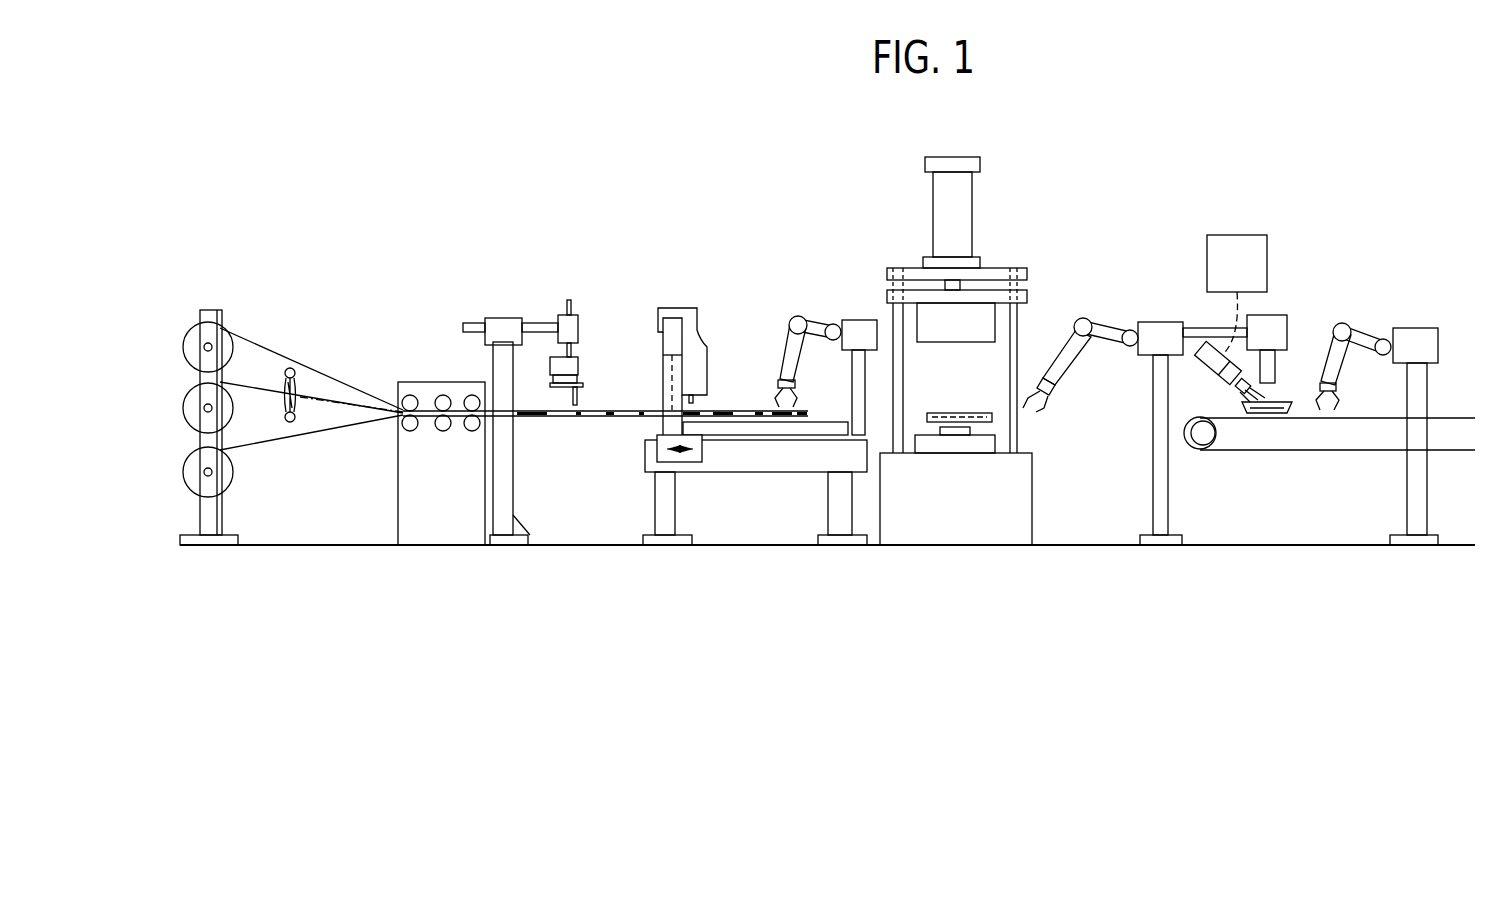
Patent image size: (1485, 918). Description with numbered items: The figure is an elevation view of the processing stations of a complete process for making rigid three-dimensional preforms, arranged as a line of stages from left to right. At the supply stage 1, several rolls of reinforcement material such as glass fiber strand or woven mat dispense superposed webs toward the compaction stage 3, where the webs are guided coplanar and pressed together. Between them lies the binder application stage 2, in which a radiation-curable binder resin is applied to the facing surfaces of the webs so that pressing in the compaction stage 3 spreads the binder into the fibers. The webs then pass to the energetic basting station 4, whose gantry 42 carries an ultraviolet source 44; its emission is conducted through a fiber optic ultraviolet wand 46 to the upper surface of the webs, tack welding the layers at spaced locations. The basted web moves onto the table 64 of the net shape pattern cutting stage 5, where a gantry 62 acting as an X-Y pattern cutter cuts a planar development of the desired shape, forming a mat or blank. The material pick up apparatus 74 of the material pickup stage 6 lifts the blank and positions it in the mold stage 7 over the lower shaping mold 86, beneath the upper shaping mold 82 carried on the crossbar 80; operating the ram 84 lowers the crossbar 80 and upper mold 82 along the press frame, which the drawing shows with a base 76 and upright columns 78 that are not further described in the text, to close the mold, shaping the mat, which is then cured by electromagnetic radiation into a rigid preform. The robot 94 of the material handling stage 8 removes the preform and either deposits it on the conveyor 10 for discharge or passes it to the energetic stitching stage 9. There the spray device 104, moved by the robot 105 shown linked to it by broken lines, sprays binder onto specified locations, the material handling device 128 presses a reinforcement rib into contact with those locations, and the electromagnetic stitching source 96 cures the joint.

The supply stage 1 is at (204, 285).
The binder application stage 2 is at (281, 323).
The compaction stage 3 is at (427, 320).
The energetic basting station 4 is at (544, 377).
The net shape pattern cutting stage 5 is at (739, 377).
The material pickup stage 6 is at (826, 322).
The mold stage 7 is at (963, 345).
The material handling stage 8 is at (1172, 370).
The energetic stitching stage 9 is at (1359, 371).
The conveyor 10 is at (1453, 405).
The gantry 42 is at (506, 317).
The ultraviolet source 44 is at (556, 358).
The fiber optic ultraviolet wand 46 is at (580, 383).
The gantry 62 is at (652, 327).
The table 64 is at (768, 463).
The material pick up apparatus 74 is at (860, 320).
The press base 76 is at (900, 495).
The press columns 78 is at (1015, 342).
The crossbar 80 is at (917, 293).
The upper shaping mold 82 is at (980, 318).
The ram 84 is at (940, 192).
The lower shaping mold 86 is at (983, 443).
The robot 94 is at (1145, 330).
The electromagnetic stitching source 96 is at (1278, 315).
The spray device 104 is at (1223, 370).
The robot 105 is at (1222, 247).
The material handling device 128 is at (1412, 330).